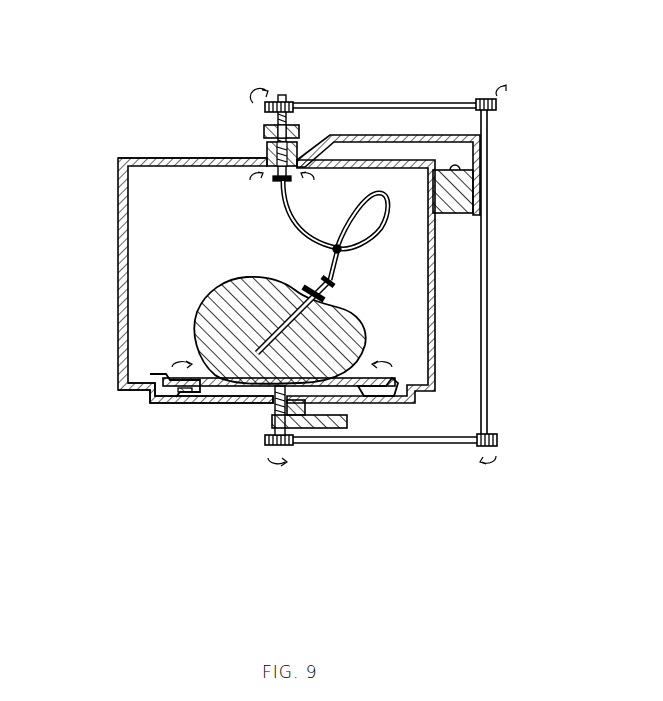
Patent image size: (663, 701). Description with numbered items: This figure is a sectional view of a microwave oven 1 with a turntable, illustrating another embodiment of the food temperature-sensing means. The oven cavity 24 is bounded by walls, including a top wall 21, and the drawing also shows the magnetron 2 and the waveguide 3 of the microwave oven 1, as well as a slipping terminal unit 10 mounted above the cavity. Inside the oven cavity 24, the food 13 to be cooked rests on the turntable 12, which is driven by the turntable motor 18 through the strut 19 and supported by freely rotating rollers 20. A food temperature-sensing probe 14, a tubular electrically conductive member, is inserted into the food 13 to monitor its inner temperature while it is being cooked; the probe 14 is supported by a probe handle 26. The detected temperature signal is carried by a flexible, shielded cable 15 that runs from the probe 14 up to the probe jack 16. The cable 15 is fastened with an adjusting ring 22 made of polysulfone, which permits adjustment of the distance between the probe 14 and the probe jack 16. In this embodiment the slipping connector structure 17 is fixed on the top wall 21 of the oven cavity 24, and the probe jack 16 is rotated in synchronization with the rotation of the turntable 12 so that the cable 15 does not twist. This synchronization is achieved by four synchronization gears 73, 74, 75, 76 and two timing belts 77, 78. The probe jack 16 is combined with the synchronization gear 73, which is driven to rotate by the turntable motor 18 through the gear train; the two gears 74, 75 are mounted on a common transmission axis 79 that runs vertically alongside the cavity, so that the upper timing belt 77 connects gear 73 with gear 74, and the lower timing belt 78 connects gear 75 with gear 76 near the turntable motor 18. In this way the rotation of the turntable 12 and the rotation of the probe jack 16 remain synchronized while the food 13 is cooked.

The microwave oven 1 is at (118, 362).
The magnetron 2 is at (476, 198).
The waveguide 3 is at (447, 135).
The slipping terminal unit 10 is at (300, 132).
The turntable 12 is at (127, 392).
The food 13 is at (225, 282).
The food temperature-sensing probe 14 is at (362, 333).
The flexible, shielded cable 15 is at (290, 213).
The probe jack 16 is at (265, 153).
The slipping connector structure 17 is at (260, 140).
The turntable motor 18 is at (350, 420).
The strut 19 is at (268, 408).
The freely rotating rollers 20 is at (188, 397).
The top wall 21 is at (140, 158).
The adjusting ring 22 is at (341, 248).
The oven cavity 24 is at (148, 196).
The probe handle 26 is at (330, 297).
The synchronization gear 73 is at (290, 100).
The synchronization gear 74 is at (500, 106).
The synchronization gear 75 is at (497, 443).
The synchronization gear 76 is at (262, 448).
The timing belt 77 is at (362, 103).
The timing belt 78 is at (452, 445).
The transmission axis 79 is at (490, 375).